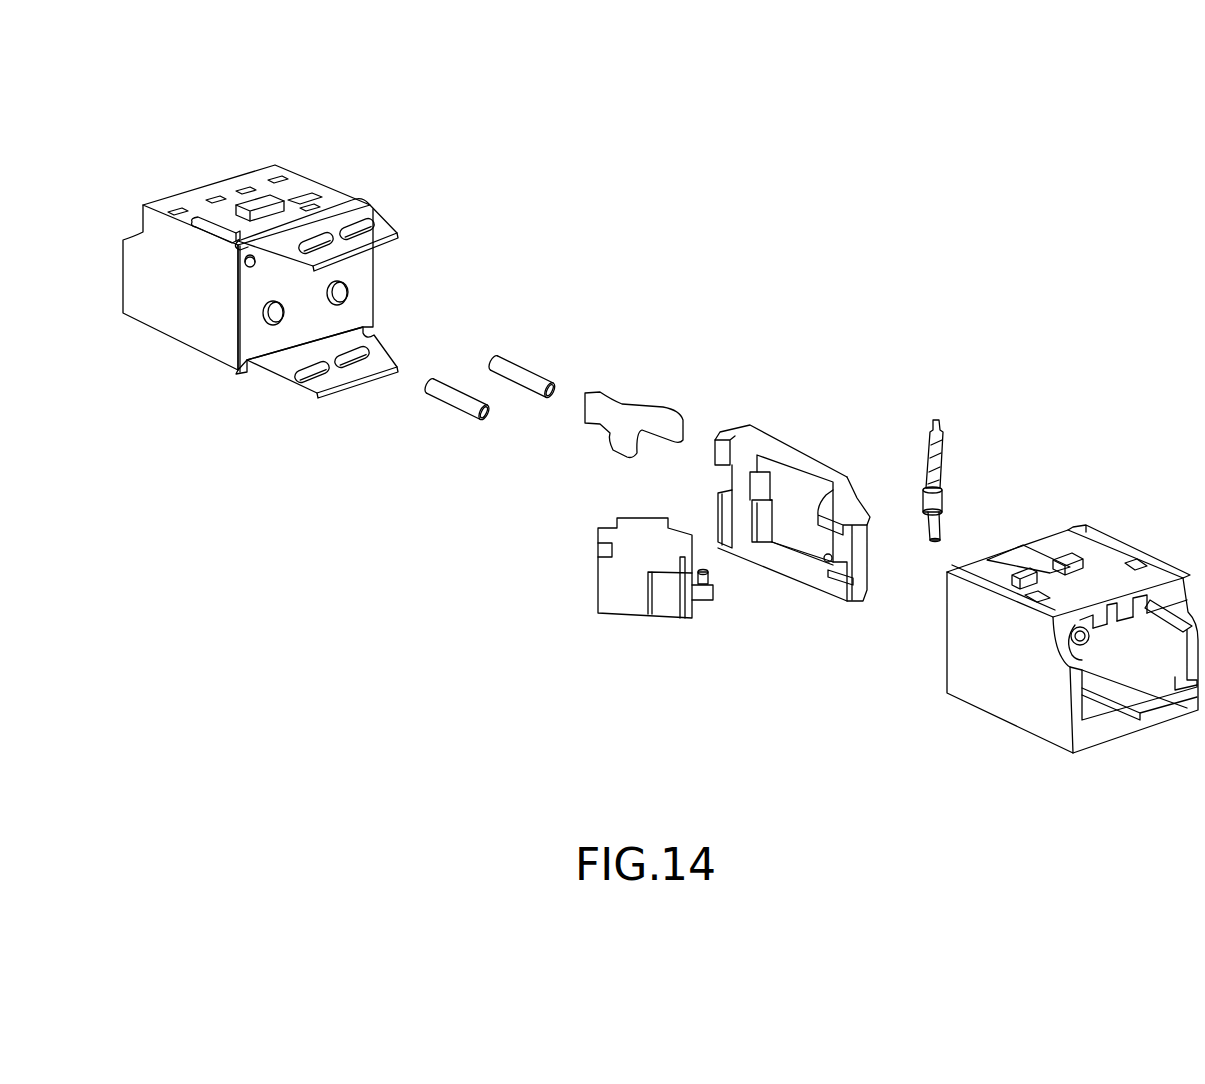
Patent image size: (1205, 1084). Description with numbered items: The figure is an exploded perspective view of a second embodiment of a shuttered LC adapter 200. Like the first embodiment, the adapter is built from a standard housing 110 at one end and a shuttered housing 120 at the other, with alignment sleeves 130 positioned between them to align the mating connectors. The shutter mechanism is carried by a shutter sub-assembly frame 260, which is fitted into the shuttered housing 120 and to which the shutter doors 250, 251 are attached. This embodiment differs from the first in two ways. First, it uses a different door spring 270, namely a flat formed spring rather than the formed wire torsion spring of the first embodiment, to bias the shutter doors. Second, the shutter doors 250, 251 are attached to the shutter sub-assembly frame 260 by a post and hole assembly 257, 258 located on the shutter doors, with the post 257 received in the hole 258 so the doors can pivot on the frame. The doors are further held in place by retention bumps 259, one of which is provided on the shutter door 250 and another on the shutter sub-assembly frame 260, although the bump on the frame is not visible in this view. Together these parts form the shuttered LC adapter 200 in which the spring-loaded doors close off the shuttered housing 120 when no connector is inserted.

The shuttered LC adapter 200 is at (830, 194).
The standard housing 110 is at (256, 182).
The alignment sleeves 130 is at (518, 393).
The door spring 270 is at (638, 405).
The shutter sub-assembly frame 260 is at (775, 442).
The shutter door 250 is at (623, 593).
The post 257 is at (707, 573).
The retention bump 259 is at (703, 603).
The shutter door 251 is at (940, 420).
The hole 258 is at (935, 502).
The shuttered housing 120 is at (1018, 702).